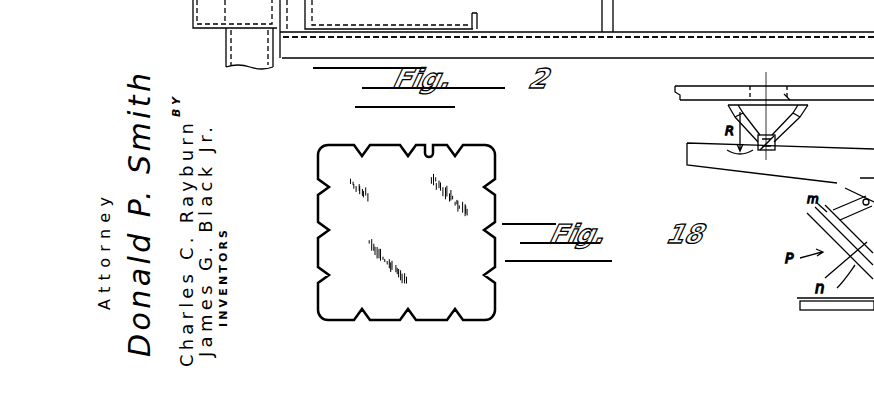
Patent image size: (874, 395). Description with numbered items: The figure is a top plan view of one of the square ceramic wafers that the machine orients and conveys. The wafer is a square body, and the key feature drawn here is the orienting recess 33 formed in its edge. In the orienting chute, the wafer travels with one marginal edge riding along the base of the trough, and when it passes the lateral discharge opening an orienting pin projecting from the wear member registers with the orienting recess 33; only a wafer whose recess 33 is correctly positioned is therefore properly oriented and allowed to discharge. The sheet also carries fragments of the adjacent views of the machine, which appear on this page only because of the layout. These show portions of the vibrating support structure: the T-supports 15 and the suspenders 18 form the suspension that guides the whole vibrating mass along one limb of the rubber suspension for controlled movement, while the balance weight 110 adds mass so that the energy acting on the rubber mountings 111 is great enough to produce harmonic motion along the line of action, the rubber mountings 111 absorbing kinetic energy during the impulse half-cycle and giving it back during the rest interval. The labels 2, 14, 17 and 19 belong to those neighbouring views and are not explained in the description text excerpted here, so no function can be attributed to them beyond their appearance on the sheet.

In FIG. 18, the orienting recess 33 is at (433, 145).
In FIG. 2, the beam 2 is at (718, 40).
In FIG. 2, the body 14 is at (845, 188).
In FIG. 2, the T-support 15 is at (788, 100).
In FIG. 2, the funnel member 17 is at (745, 104).
In FIG. 2, the suspender 18 is at (780, 122).
In FIG. 2, the link 19 is at (772, 146).
In FIG. 2, the balance weight 110 is at (833, 233).
In FIG. 2, the rubber mounting 111 is at (808, 212).